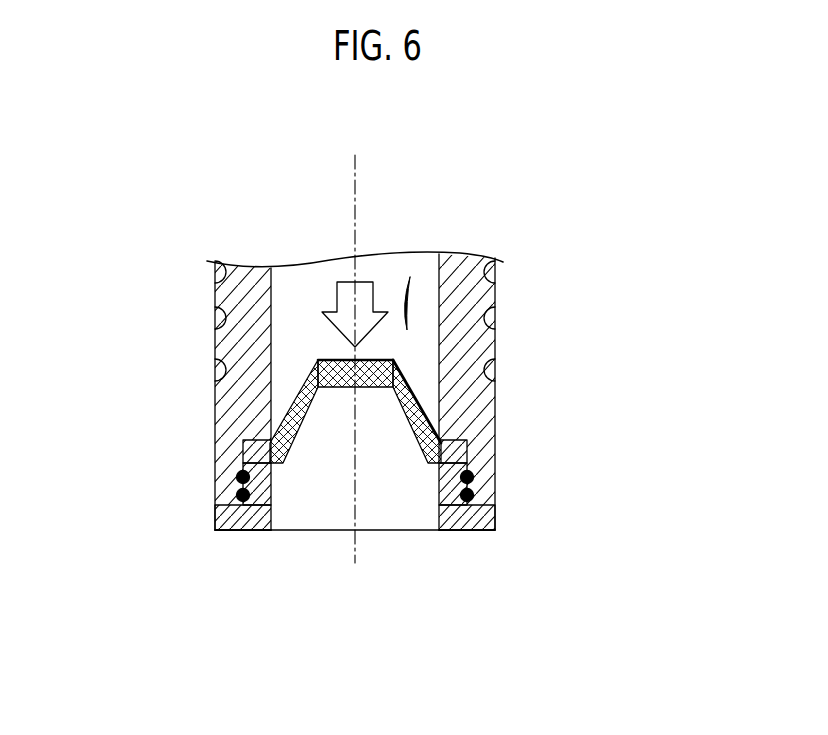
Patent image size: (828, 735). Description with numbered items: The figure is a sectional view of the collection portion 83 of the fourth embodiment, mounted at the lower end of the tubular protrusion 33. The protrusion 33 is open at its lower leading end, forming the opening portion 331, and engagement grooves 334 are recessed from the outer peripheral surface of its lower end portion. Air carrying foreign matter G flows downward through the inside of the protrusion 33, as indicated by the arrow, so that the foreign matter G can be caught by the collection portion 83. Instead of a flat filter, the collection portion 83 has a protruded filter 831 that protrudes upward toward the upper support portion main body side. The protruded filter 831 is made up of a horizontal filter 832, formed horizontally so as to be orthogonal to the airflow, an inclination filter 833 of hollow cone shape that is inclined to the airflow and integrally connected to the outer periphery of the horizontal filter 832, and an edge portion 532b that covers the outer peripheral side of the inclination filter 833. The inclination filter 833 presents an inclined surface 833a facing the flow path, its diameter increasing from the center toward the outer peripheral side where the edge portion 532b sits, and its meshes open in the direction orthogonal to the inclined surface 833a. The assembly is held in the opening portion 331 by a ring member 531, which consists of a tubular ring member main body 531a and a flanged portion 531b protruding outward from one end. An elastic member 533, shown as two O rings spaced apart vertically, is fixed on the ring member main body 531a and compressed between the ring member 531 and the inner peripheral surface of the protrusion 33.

The foreign matter G is at (421, 285).
The protrusion 33 is at (463, 262).
The opening portion 331 is at (287, 531).
The engagement grooves 334 is at (495, 318).
The collection portion 83 is at (245, 531).
The protruded filter 831 is at (283, 449).
The horizontal filter 832 is at (383, 358).
The inclination filter 833 is at (413, 400).
The inclined surface 833a is at (404, 365).
The ring member 531 is at (446, 490).
The ring member main body 531a is at (455, 487).
The flanged portion 531b is at (480, 517).
The edge portion 532b is at (467, 452).
The elastic member 533 is at (243, 477).